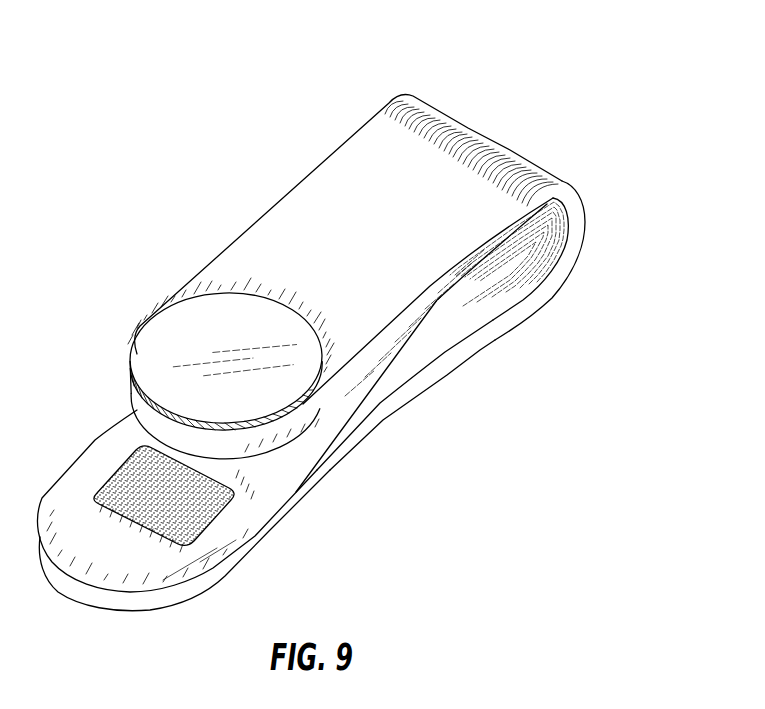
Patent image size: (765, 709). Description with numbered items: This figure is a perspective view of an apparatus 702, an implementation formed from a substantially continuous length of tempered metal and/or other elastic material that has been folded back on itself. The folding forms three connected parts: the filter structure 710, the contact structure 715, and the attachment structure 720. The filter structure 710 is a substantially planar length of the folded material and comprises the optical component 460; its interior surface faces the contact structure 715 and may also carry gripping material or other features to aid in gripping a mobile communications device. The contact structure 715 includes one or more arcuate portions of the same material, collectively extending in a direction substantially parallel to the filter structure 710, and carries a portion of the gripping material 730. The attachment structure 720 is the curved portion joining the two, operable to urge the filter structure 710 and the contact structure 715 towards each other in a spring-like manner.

The apparatus 702 is at (133, 131).
The filter structure 710 is at (256, 219).
The attachment structure 720 is at (585, 237).
The contact structure 715 is at (328, 474).
The optical component 460 is at (165, 360).
The gripping material 730 is at (113, 490).